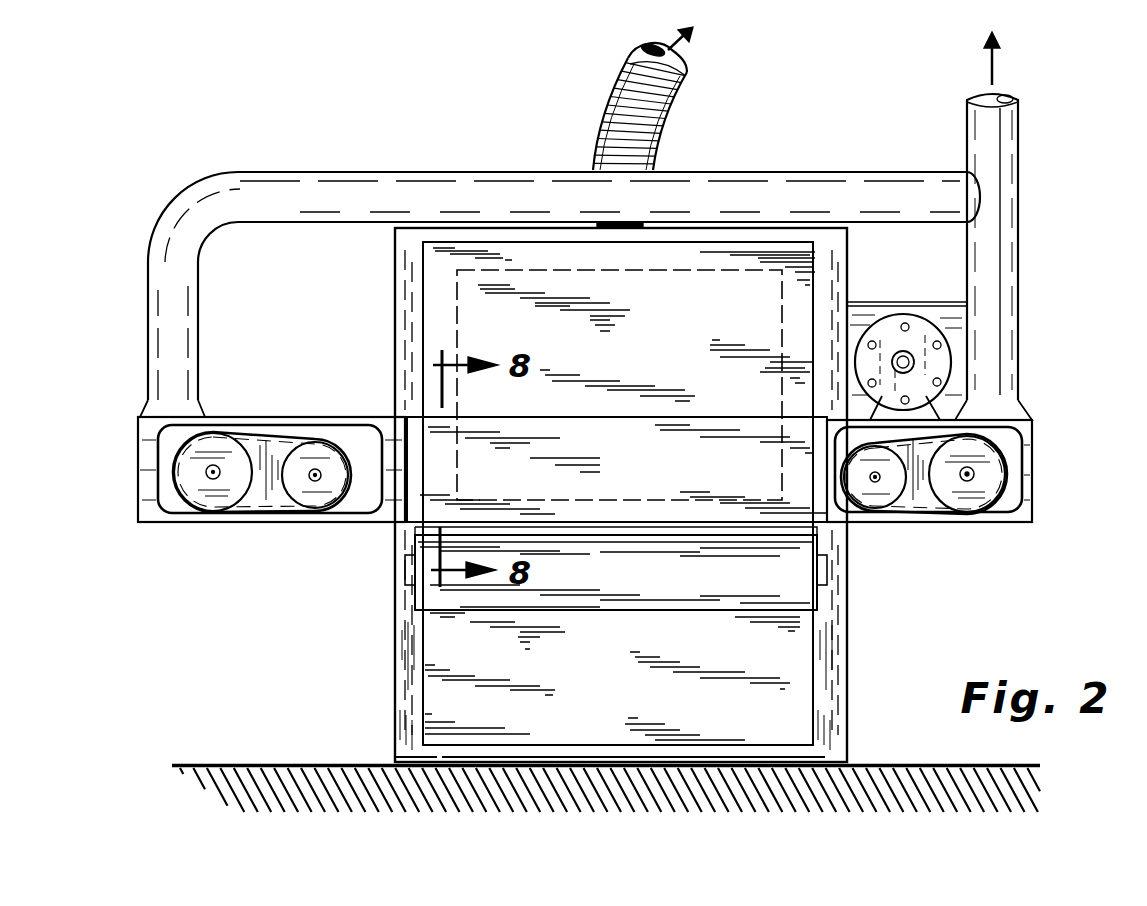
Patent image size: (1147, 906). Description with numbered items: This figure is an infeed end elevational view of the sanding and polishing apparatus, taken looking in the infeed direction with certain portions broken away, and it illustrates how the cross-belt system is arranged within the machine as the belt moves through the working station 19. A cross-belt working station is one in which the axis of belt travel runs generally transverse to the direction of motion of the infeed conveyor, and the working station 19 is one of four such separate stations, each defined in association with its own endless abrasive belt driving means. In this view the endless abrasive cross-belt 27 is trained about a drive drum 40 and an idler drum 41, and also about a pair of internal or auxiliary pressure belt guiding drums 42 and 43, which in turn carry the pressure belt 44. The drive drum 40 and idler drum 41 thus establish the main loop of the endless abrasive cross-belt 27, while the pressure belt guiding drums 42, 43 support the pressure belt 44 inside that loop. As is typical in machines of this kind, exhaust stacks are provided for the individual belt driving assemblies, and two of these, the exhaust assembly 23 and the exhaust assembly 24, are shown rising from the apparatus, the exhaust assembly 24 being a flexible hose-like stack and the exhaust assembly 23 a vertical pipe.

The working station 19 is at (590, 535).
The exhaust assembly 23 is at (967, 122).
The exhaust assembly 24 is at (608, 102).
The endless abrasive cross-belt 27 is at (918, 505).
The drive drum 40 is at (973, 490).
The idler drum 41 is at (218, 492).
The pressure belt guiding drum 42 is at (868, 490).
The pressure belt guiding drum 43 is at (320, 492).
The pressure belt 44 is at (342, 447).